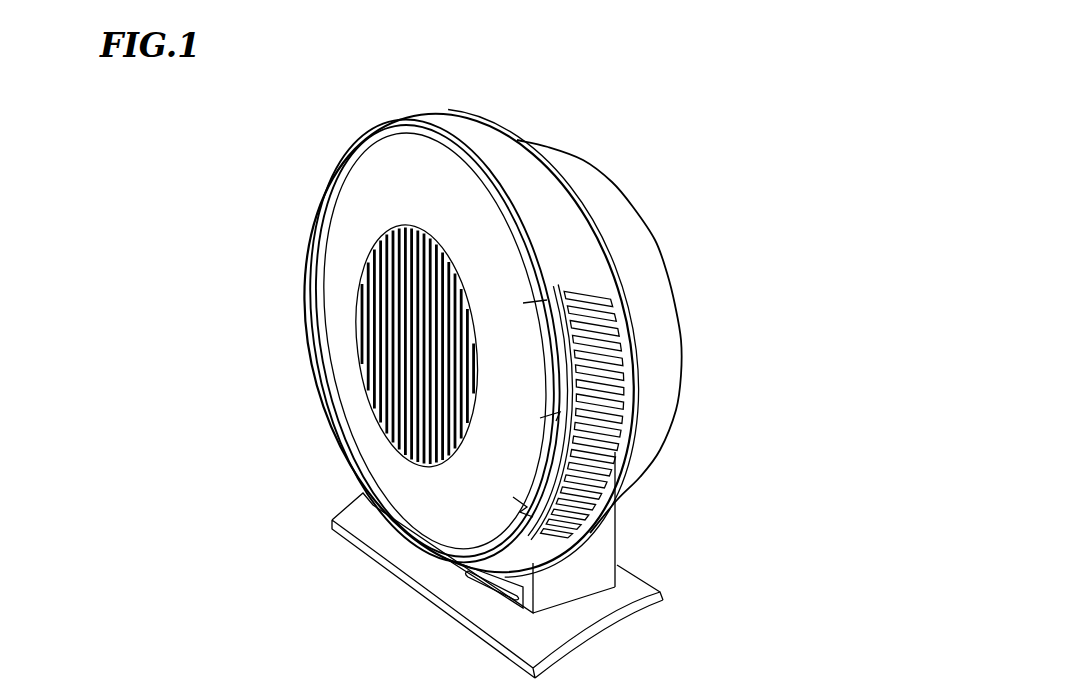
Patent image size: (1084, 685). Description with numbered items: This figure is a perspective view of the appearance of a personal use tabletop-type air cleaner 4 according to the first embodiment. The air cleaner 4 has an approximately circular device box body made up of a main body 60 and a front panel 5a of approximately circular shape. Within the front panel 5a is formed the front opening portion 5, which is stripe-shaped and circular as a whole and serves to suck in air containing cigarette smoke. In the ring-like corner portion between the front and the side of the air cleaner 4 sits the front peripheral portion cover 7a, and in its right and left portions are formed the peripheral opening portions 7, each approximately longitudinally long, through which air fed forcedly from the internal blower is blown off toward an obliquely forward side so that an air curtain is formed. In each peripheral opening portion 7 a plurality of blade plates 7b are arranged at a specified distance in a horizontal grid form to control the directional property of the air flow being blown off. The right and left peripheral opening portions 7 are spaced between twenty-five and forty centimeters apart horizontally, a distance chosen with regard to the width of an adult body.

The tabletop-type air cleaner 4 is at (677, 167).
The front opening portion 5 is at (412, 338).
The front panel 5a is at (332, 268).
The peripheral opening portion 7 is at (594, 404).
The front peripheral portion cover 7a is at (474, 140).
The blade plate 7b is at (618, 359).
The main body 60 is at (590, 188).